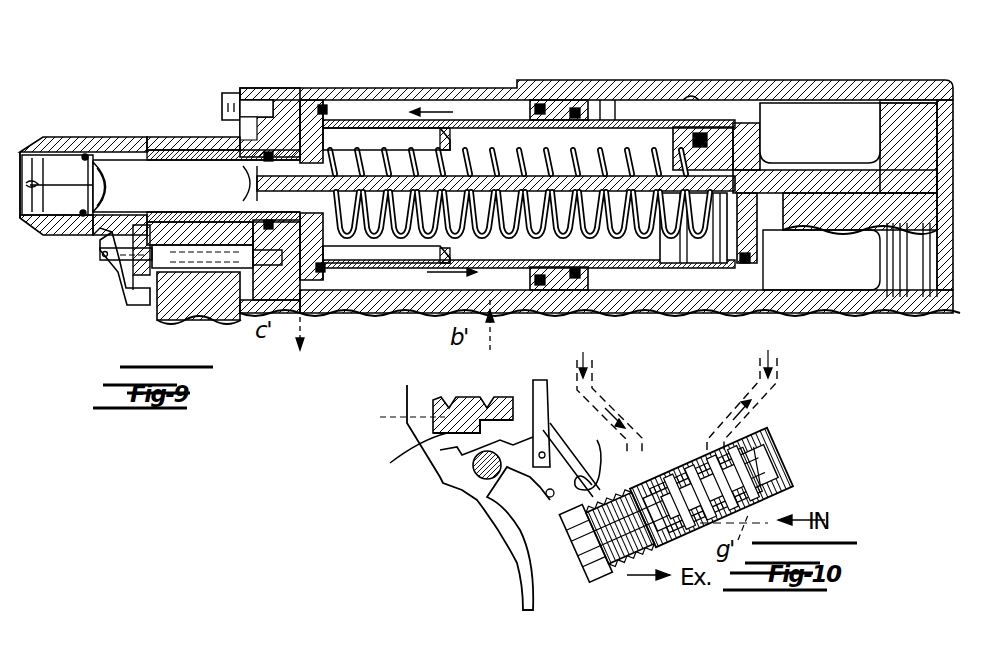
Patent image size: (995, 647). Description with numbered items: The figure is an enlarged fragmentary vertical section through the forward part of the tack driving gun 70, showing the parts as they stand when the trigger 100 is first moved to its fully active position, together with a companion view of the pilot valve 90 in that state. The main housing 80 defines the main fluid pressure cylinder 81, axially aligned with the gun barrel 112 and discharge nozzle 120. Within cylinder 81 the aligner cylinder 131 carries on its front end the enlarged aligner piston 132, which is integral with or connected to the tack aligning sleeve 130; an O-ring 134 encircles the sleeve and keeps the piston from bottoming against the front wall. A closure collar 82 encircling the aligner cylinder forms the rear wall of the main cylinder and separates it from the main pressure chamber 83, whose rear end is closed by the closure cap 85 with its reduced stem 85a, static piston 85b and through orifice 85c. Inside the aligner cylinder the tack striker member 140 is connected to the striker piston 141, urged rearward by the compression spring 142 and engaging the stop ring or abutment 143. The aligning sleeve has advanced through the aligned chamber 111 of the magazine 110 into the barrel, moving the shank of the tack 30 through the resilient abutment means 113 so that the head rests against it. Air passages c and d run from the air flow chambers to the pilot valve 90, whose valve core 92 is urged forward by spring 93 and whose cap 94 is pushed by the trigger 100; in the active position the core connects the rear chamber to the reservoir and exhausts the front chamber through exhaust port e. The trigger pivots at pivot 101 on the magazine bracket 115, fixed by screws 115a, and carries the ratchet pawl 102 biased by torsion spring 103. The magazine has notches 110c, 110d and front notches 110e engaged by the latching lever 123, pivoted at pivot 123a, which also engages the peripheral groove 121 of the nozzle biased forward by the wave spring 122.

In FIG. 9, the tack 30 is at (60, 131).
In FIG. 9, the tack driving gun 70 is at (824, 84).
In FIG. 9, the main housing 80 is at (632, 83).
In FIG. 9, the main fluid pressure cylinder 81 is at (386, 110).
In FIG. 9, the closure collar 82 is at (570, 103).
In FIG. 9, the main pressure chamber 83 is at (690, 96).
In FIG. 9, the closure cap 85 is at (888, 141).
In FIG. 9, the reduced stem 85a is at (790, 228).
In FIG. 9, the static piston 85b is at (750, 144).
In FIG. 9, the orifice 85c is at (826, 228).
In FIG. 10, the pilot valve 90 is at (741, 493).
In FIG. 10, the valve core 92 is at (702, 460).
In FIG. 10, the spring 93 is at (706, 490).
In FIG. 10, the cap 94 is at (567, 570).
In FIG. 10, the trigger 100 is at (516, 556).
In FIG. 10, the pivot 101 is at (470, 484).
In FIG. 10, the ratchet pawl 102 is at (542, 400).
In FIG. 10, the torsion spring 103 is at (546, 486).
In FIG. 9, the magazine 110 is at (204, 320).
In FIG. 10, the magazine 110 is at (448, 398).
In FIG. 10, the notches 110c is at (389, 417).
In FIG. 10, the notches 110d is at (396, 453).
In FIG. 9, the notches 110e is at (136, 300).
In FIG. 9, the tack receiving chambers 111 is at (140, 138).
In FIG. 9, the gun barrel 112 is at (63, 225).
In FIG. 9, the abutment means 113 is at (100, 256).
In FIG. 9, the magazine bracket 115 is at (168, 134).
In FIG. 10, the magazine bracket 115 is at (408, 404).
In FIG. 9, the screws 115a is at (224, 90).
In FIG. 9, the discharge nozzle 120 is at (60, 126).
In FIG. 9, the peripheral groove 121 is at (106, 134).
In FIG. 9, the wave spring 122 is at (108, 116).
In FIG. 9, the latching lever 123 is at (126, 290).
In FIG. 9, the pivot 123a is at (110, 260).
In FIG. 9, the tack aligning sleeve 130 is at (160, 199).
In FIG. 9, the aligner cylinder 131 is at (624, 107).
In FIG. 9, the aligner piston 132 is at (340, 66).
In FIG. 9, the O-ring 134 is at (266, 66).
In FIG. 9, the tack striker member 140 is at (282, 188).
In FIG. 9, the striker piston 141 is at (692, 242).
In FIG. 9, the compression spring 142 is at (534, 219).
In FIG. 9, the abutment 143 is at (412, 148).
In FIG. 10, the air flow passage c is at (608, 384).
In FIG. 10, the air flow passage d is at (790, 384).
In FIG. 10, the exhaust port e is at (596, 465).